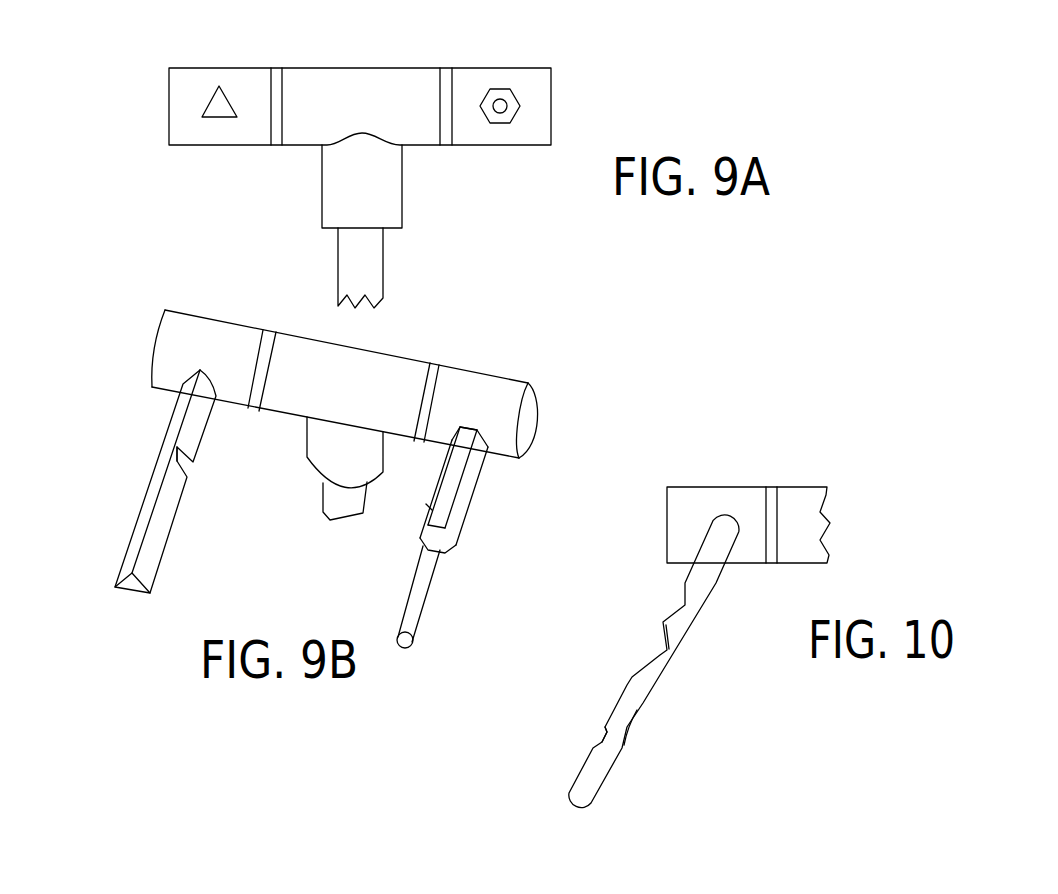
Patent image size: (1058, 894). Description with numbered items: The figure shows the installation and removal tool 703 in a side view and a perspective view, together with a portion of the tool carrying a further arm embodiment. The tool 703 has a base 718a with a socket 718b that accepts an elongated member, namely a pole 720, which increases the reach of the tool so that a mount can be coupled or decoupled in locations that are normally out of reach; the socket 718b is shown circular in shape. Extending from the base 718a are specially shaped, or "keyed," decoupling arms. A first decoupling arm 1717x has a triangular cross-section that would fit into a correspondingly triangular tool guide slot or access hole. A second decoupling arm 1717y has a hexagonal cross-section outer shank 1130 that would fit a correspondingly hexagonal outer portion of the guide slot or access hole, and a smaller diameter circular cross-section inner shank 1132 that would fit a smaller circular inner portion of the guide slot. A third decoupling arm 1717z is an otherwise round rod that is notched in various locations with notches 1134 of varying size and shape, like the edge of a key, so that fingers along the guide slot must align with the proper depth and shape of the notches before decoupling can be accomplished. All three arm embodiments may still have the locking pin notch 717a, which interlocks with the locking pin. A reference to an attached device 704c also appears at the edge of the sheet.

In FIG. 9A, the installation and removal tool 703 is at (436, 40).
In FIG. 9B, the installation and removal tool 703 is at (478, 328).
In FIG. 10, the installation and removal tool 703 is at (781, 444).
In FIG. 9A, the connector 704c is at (693, 13).
In FIG. 9A, the base 718a is at (462, 145).
In FIG. 9B, the base 718a is at (325, 362).
In FIG. 10, the base 718a is at (753, 487).
In FIG. 9A, the socket 718b is at (322, 187).
In FIG. 9A, the pole 720 is at (338, 282).
In FIG. 9A, the first decoupling arm 1717x is at (203, 100).
In FIG. 9B, the first decoupling arm 1717x is at (173, 448).
In FIG. 9A, the second decoupling arm 1717y is at (519, 96).
In FIG. 9B, the second decoupling arm 1717y is at (496, 510).
In FIG. 10, the third decoupling arm 1717z is at (717, 585).
In FIG. 9B, the notch 717a is at (186, 461).
In FIG. 10, the notch 717a is at (602, 741).
In FIG. 9B, the outer shank 1130 is at (462, 532).
In FIG. 9B, the inner shank 1132 is at (428, 598).
In FIG. 10, the notches 1134 is at (683, 605).